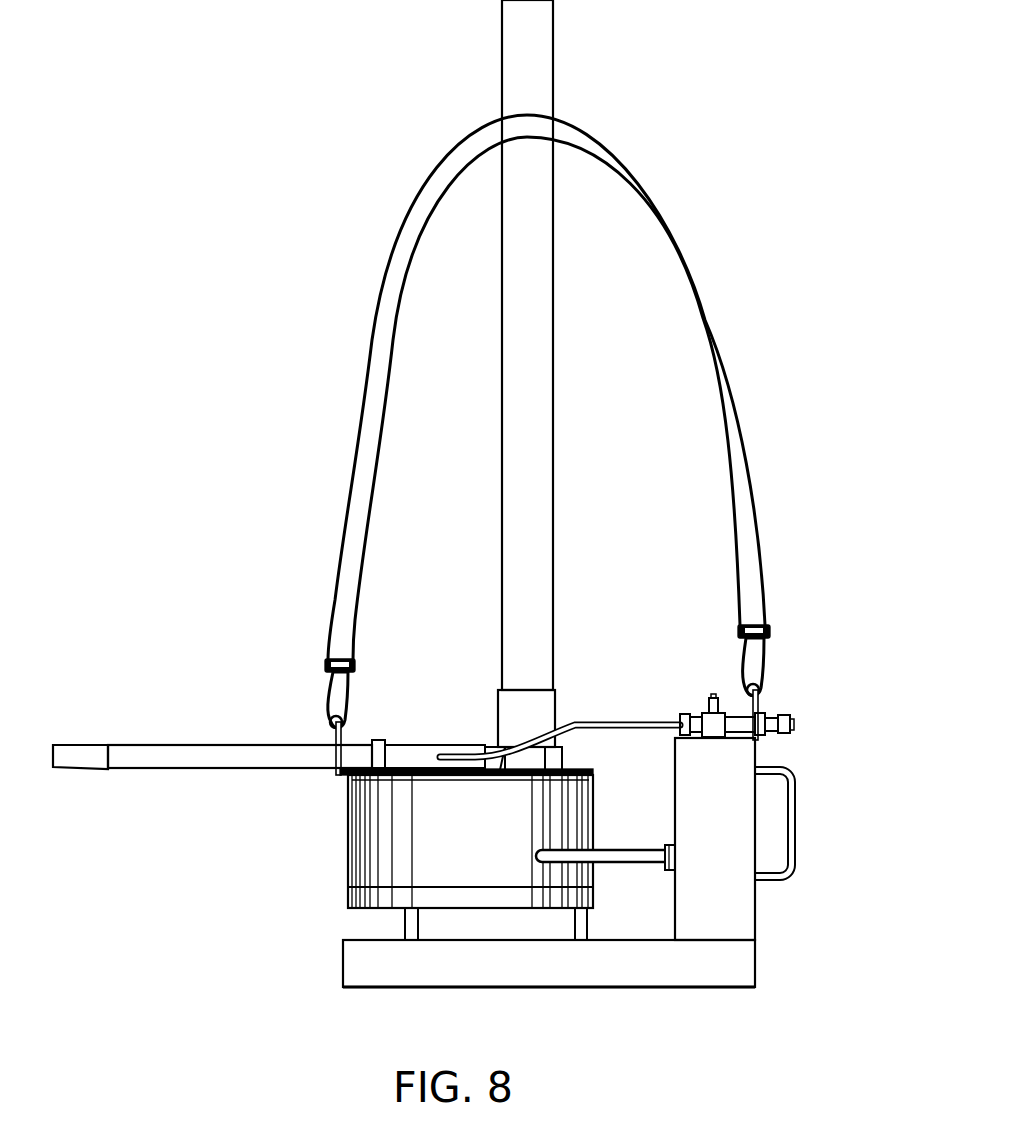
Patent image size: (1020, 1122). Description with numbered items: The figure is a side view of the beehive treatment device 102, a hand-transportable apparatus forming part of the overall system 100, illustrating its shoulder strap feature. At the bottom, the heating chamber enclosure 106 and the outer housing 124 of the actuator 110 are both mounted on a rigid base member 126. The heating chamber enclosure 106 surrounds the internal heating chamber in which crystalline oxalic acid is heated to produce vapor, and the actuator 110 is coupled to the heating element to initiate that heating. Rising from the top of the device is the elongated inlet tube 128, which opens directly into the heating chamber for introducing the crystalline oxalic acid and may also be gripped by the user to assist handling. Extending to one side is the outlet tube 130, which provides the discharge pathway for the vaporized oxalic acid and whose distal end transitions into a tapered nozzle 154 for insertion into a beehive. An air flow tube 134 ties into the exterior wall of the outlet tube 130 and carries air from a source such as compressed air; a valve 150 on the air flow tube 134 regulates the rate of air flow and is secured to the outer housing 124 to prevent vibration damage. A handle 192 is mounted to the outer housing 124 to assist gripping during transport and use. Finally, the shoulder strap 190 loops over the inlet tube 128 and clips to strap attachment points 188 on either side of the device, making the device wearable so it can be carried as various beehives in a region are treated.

The fluid transfer system 100 is at (272, 445).
The beehive treatment device 102 is at (257, 524).
The heating chamber enclosure 106 is at (318, 862).
The actuator 110 is at (775, 903).
The outer housing 124 is at (758, 921).
The rigid base member 126 is at (758, 965).
The inlet tube 128 is at (502, 616).
The outlet tube 130 is at (238, 745).
The air flow tube 134 is at (580, 722).
The valve 150 is at (703, 712).
The nozzle 154 is at (80, 745).
The strap attachment points 188 is at (346, 735).
The shoulder strap 190 is at (737, 398).
The handle 192 is at (790, 778).